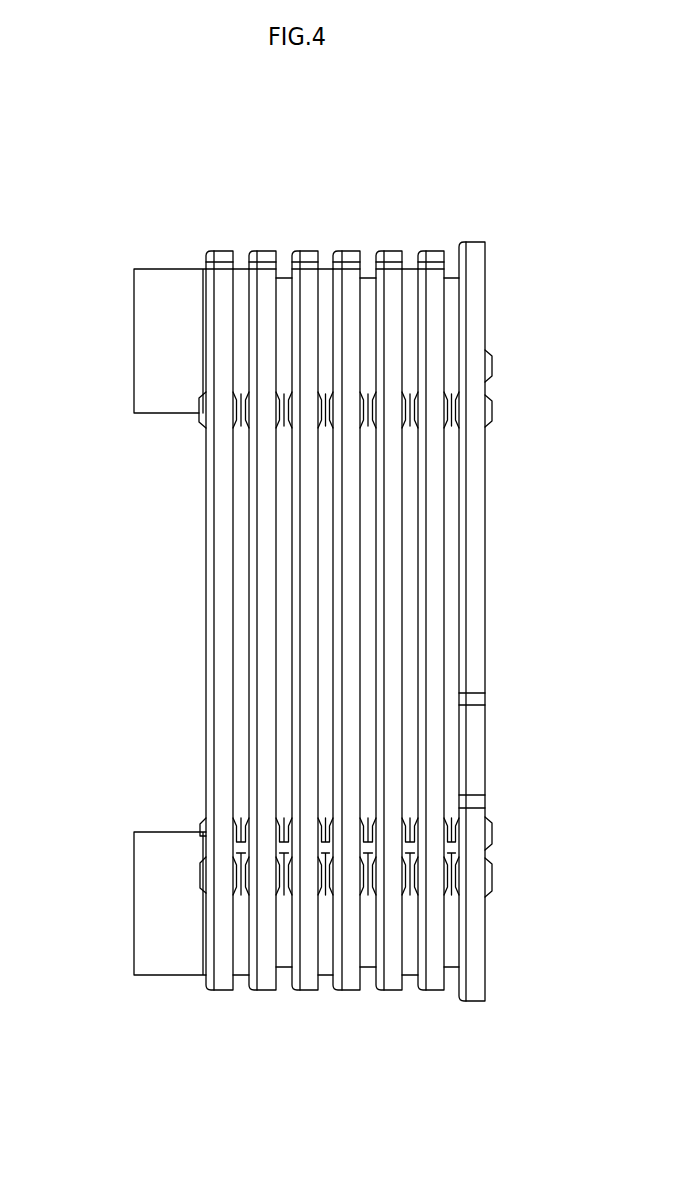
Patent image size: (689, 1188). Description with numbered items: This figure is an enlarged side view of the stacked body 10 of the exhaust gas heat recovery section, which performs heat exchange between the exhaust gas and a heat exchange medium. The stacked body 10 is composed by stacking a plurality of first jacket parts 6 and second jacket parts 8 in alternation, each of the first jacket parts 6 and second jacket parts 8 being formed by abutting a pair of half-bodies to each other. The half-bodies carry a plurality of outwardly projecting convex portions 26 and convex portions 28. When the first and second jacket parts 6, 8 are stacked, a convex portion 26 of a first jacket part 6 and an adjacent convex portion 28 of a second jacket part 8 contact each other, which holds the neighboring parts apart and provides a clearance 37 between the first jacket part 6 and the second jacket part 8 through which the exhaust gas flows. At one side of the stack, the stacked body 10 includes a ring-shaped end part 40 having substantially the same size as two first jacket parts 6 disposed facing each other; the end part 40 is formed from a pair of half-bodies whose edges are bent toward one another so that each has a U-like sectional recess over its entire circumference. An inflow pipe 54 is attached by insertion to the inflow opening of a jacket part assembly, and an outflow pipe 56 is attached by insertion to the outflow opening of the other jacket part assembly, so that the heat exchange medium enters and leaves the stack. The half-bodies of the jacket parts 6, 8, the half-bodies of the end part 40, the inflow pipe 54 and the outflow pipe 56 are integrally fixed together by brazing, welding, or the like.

The stacked body 10 is at (379, 233).
The first jacket part 6 is at (222, 986).
The second jacket part 8 is at (270, 988).
The clearance 37 is at (285, 569).
The end part 40 is at (483, 993).
The convex portion 26 is at (233, 858).
The convex portion 28 is at (237, 871).
The inflow pipe 54 is at (150, 962).
The outflow pipe 56 is at (140, 310).